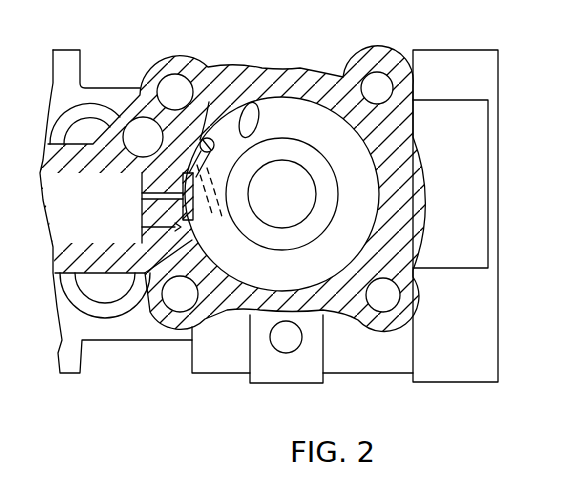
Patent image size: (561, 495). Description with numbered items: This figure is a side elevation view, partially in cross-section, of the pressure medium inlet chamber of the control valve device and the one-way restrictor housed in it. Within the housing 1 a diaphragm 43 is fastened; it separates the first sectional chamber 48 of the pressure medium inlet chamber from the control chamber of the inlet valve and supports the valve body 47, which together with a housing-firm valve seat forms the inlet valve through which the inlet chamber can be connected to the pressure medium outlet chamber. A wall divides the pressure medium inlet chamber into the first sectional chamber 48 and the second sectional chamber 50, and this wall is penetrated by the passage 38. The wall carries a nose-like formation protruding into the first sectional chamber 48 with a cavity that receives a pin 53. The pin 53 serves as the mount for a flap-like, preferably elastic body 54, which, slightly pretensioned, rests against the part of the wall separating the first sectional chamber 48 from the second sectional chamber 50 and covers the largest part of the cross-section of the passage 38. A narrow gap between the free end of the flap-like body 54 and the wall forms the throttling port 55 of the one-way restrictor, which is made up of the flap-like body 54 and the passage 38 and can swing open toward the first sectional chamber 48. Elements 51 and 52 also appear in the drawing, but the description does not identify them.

The housing 1 is at (148, 100).
The passage 38 is at (142, 228).
The diaphragm 43 is at (228, 224).
The valve body 47 is at (252, 100).
The first sectional chamber 48 is at (203, 248).
The second sectional chamber 50 is at (67, 233).
The pin head 51 is at (182, 185).
The seal 52 is at (209, 102).
The pin 53 is at (214, 160).
The flap-like body 54 is at (145, 194).
The throttling port 55 is at (173, 224).